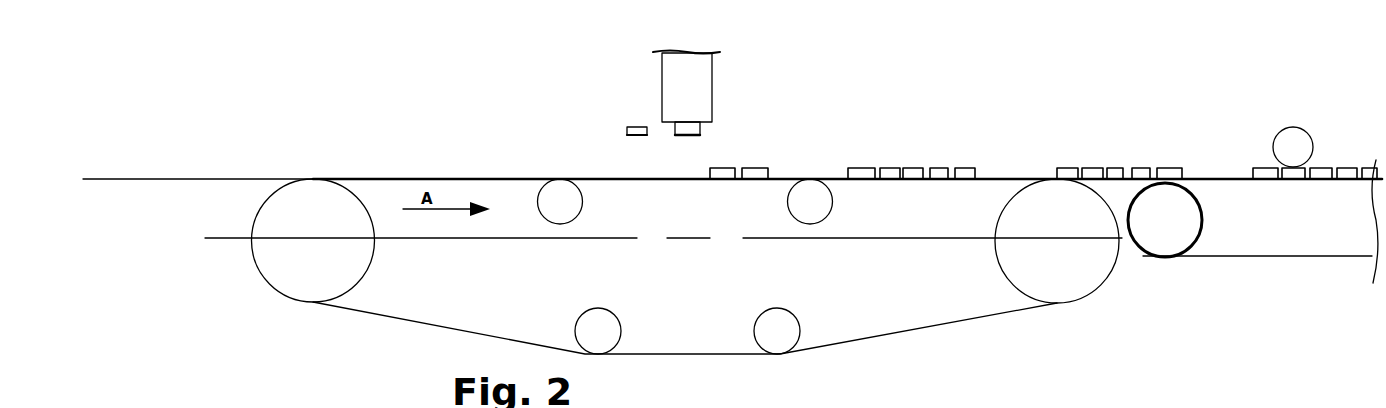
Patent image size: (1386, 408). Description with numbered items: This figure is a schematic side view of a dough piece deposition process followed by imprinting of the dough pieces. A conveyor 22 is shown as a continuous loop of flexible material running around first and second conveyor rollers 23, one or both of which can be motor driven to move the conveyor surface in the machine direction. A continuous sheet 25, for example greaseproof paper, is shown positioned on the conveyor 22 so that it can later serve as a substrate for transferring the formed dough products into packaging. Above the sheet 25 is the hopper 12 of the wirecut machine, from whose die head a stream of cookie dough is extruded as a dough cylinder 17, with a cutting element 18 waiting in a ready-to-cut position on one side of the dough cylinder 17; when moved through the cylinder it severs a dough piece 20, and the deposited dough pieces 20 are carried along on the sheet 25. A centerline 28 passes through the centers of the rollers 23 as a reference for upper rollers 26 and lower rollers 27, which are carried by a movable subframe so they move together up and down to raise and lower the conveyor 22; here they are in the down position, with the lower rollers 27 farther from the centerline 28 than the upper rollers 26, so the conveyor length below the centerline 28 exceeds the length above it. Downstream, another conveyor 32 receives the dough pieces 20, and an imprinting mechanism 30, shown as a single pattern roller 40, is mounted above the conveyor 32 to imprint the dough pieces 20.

The hopper 12 is at (705, 87).
The dough cylinder 17 is at (704, 133).
The cutting element 18 is at (629, 127).
The dough pieces 20 is at (728, 167).
The conveyor 22 is at (437, 325).
The conveyor rollers 23 is at (298, 197).
The continuous sheet 25 is at (143, 178).
The upper rollers 26 is at (560, 192).
The lower rollers 27 is at (597, 343).
The centerline 28 is at (620, 238).
The imprinting mechanism 30 is at (1280, 100).
The conveyor 32 is at (1232, 183).
The pattern roller 40 is at (1297, 140).